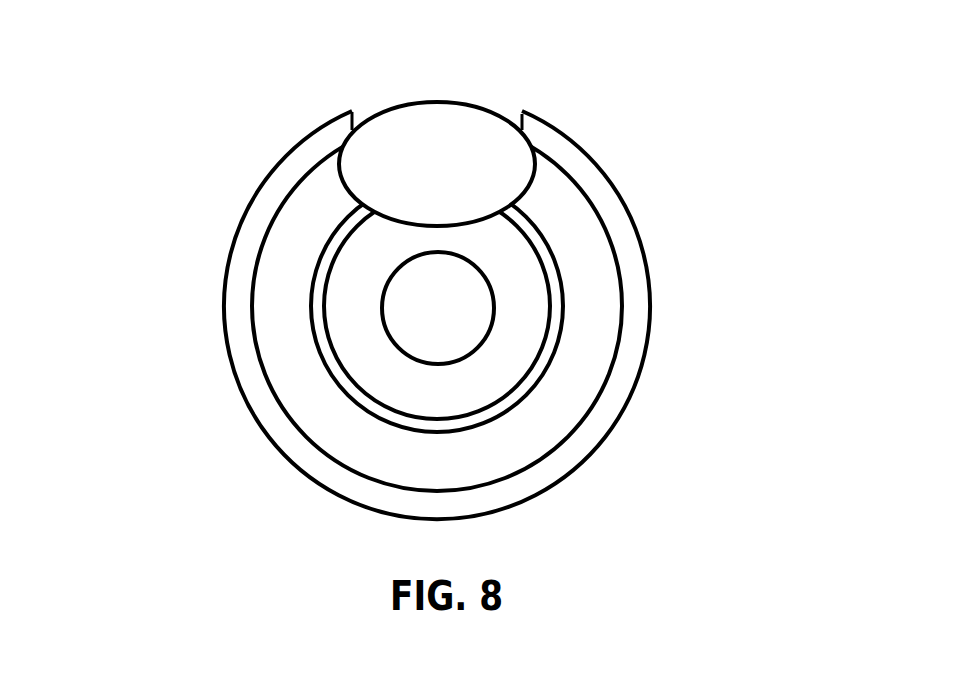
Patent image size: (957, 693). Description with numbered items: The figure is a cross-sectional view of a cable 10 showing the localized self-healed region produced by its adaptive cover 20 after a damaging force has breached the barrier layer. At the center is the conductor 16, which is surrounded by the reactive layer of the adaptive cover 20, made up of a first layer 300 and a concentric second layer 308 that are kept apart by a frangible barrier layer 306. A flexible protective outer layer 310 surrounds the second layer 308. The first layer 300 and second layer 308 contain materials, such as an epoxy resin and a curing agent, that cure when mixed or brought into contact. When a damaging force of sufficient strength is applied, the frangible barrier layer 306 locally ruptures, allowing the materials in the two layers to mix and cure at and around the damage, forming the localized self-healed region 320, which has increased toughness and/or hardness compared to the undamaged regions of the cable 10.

The cable 10 is at (198, 97).
The conductor 16 is at (467, 323).
The adaptive cover 20 is at (792, 73).
The first layer 300 is at (522, 295).
The frangible barrier layer 306 is at (550, 253).
The second layer 308 is at (550, 197).
The flexible protective outer layer 310 is at (552, 142).
The localized self-healed region 320 is at (420, 100).